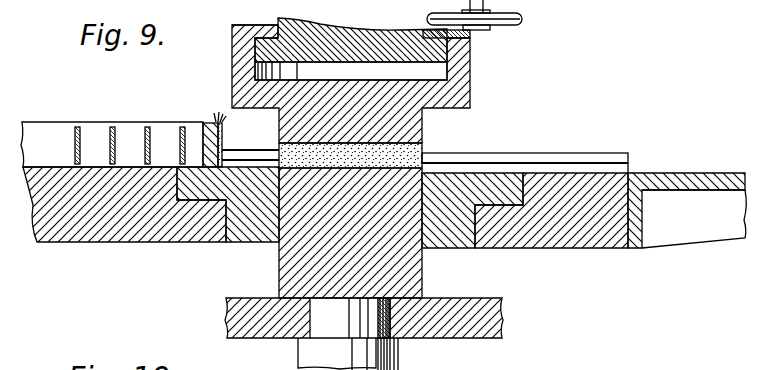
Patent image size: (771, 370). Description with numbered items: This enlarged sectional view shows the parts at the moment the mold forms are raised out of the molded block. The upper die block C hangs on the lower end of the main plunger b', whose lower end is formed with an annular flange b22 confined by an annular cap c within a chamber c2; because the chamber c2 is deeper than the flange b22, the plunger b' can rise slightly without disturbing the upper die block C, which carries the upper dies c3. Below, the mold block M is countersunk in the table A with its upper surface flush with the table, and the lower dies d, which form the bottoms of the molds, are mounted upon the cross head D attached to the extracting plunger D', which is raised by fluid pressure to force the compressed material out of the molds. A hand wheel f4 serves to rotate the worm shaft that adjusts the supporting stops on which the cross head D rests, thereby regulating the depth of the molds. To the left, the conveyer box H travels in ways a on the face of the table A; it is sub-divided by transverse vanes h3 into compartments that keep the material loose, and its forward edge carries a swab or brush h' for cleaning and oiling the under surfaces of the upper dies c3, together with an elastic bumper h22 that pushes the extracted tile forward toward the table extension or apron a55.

The upper die block C is at (360, 84).
The annular cap c is at (255, 15).
The main plunger b' is at (351, 31).
The annular flange b22 is at (440, 50).
The chamber c2 is at (440, 368).
The upper dies c3 is at (424, 144).
The lower dies d is at (358, 233).
The hand wheel f4 is at (481, 15).
The conveyer box H is at (112, 130).
The transverse vanes h3 is at (153, 120).
The swab or brush h' is at (204, 128).
The elastic bumper h22 is at (229, 151).
The table A is at (325, 197).
The mold block M is at (238, 243).
The ways a is at (525, 153).
The table extension or apron a55 is at (687, 198).
The cross head D is at (364, 307).
The extracting plunger D' is at (348, 354).